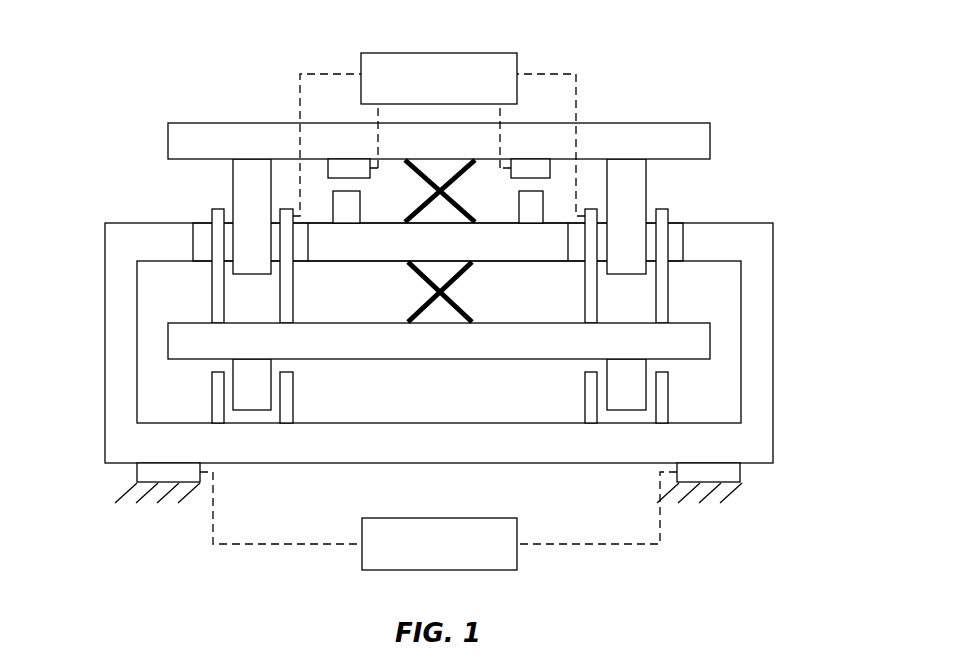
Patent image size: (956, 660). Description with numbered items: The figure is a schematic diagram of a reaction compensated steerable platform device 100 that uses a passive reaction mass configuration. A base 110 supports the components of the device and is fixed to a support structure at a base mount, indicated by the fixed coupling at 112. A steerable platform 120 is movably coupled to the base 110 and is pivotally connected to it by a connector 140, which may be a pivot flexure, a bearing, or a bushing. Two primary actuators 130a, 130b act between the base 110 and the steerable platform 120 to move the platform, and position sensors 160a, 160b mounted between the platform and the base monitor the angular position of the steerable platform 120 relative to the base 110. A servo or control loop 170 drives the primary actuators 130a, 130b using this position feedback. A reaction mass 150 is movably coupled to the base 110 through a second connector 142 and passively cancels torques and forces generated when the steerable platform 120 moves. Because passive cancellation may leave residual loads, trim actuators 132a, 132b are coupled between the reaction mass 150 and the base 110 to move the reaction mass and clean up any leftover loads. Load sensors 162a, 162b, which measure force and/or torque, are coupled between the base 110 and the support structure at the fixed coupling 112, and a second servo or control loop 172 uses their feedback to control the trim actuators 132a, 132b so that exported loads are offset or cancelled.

The reaction compensated steerable platform device 100 is at (432, 279).
The base 110 is at (105, 355).
The fixed coupling 112 is at (140, 508).
The steerable platform 120 is at (168, 143).
The primary actuator 130a is at (217, 186).
The primary actuator 130b is at (662, 187).
The trim actuator 132a is at (196, 393).
The trim actuator 132b is at (686, 397).
The connector 140 is at (457, 172).
The connector 142 is at (463, 270).
The reaction mass 150 is at (168, 340).
The position sensor 160a is at (323, 192).
The position sensor 160b is at (553, 192).
The load sensor 162a is at (137, 477).
The load sensor 162b is at (740, 470).
The servo or control loop 170 is at (478, 42).
The servo or control loop 172 is at (365, 578).